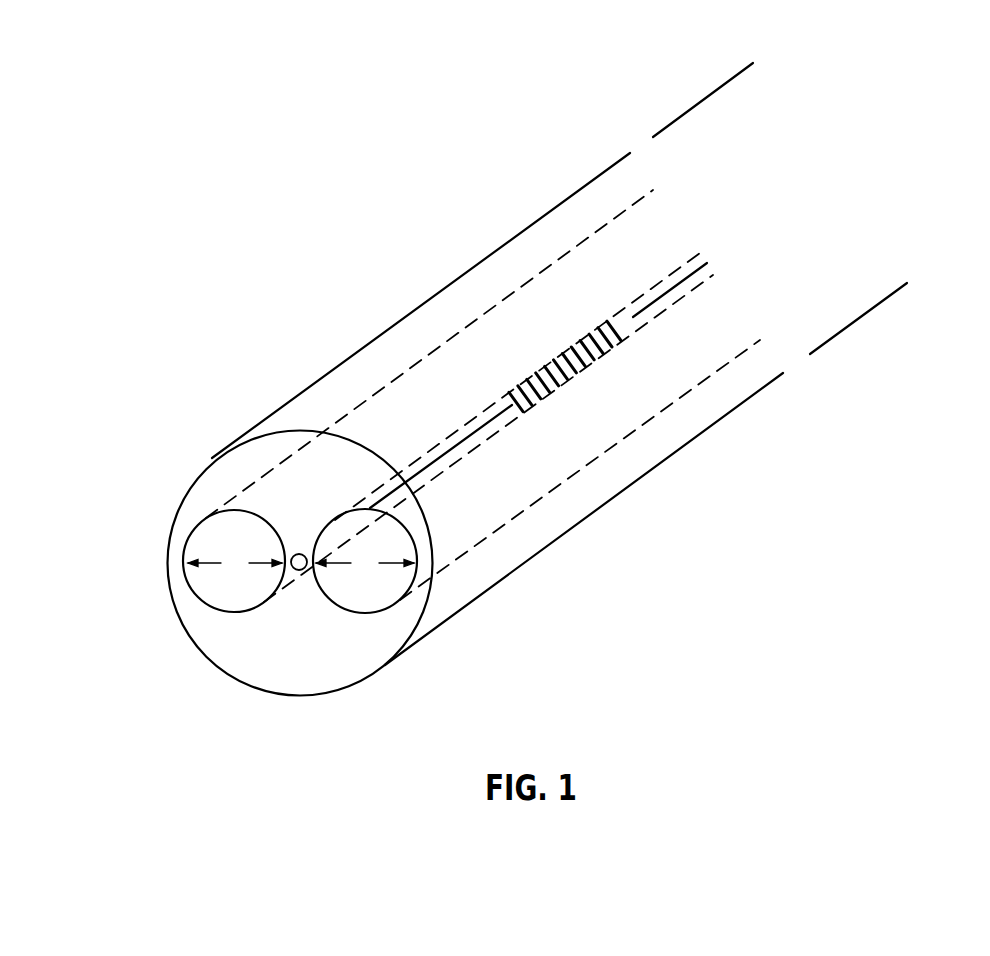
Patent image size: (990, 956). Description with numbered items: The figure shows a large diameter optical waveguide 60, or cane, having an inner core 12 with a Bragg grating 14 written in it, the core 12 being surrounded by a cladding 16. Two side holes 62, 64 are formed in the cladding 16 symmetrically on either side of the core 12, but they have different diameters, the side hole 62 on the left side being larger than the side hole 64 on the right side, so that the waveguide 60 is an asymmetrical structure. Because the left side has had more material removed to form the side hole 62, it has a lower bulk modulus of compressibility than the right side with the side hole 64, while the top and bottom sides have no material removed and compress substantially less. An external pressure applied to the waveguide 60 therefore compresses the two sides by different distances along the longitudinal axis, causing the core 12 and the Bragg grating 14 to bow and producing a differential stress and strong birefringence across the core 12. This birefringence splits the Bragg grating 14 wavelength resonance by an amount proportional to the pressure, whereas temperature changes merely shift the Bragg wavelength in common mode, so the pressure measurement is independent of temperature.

The large diameter optical waveguide 60 is at (164, 402).
The cladding 16 is at (217, 642).
The side hole 62 is at (230, 596).
The side hole 64 is at (361, 596).
The inner core 12 is at (297, 572).
The Bragg grating 14 is at (552, 356).